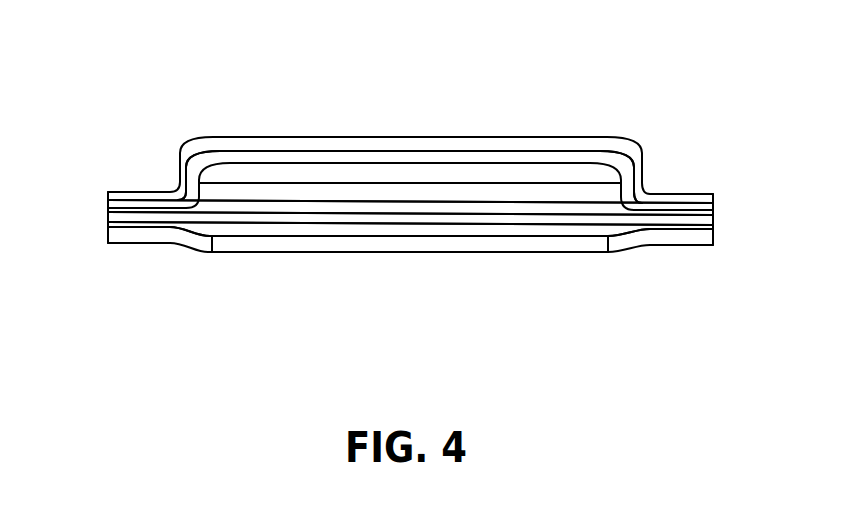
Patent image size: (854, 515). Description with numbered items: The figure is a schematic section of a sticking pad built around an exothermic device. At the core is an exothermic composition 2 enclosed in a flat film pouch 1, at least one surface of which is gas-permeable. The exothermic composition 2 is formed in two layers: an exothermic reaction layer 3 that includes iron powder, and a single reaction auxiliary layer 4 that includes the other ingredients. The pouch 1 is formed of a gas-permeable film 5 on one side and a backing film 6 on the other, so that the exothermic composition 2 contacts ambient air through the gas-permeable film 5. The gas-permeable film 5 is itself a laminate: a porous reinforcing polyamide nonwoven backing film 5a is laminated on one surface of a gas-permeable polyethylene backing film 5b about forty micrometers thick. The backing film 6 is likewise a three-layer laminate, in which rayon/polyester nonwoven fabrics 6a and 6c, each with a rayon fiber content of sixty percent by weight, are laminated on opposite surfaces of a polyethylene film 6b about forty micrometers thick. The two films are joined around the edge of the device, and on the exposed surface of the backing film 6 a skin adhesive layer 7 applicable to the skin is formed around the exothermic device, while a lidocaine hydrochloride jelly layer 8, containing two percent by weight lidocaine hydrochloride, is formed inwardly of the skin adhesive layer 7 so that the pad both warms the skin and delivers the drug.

The film pouch 1 is at (198, 142).
The exothermic composition 2 is at (258, 43).
The exothermic reaction layer 3 is at (263, 173).
The reaction auxiliary layer 4 is at (350, 193).
The gas-permeable film 5 is at (483, 43).
The porous reinforcing polyamide backing film 5a is at (488, 143).
The gas-permeable polyethylene backing film 5b is at (563, 158).
The backing film 6 is at (475, 347).
The rayon/polyester nonwoven fabric 6a is at (472, 207).
The polyethylene film 6b is at (553, 218).
The rayon/polyester nonwoven fabric 6c is at (593, 228).
The skin adhesive layer 7 is at (148, 235).
The lidocaine hydrochloride jelly layer 8 is at (302, 243).